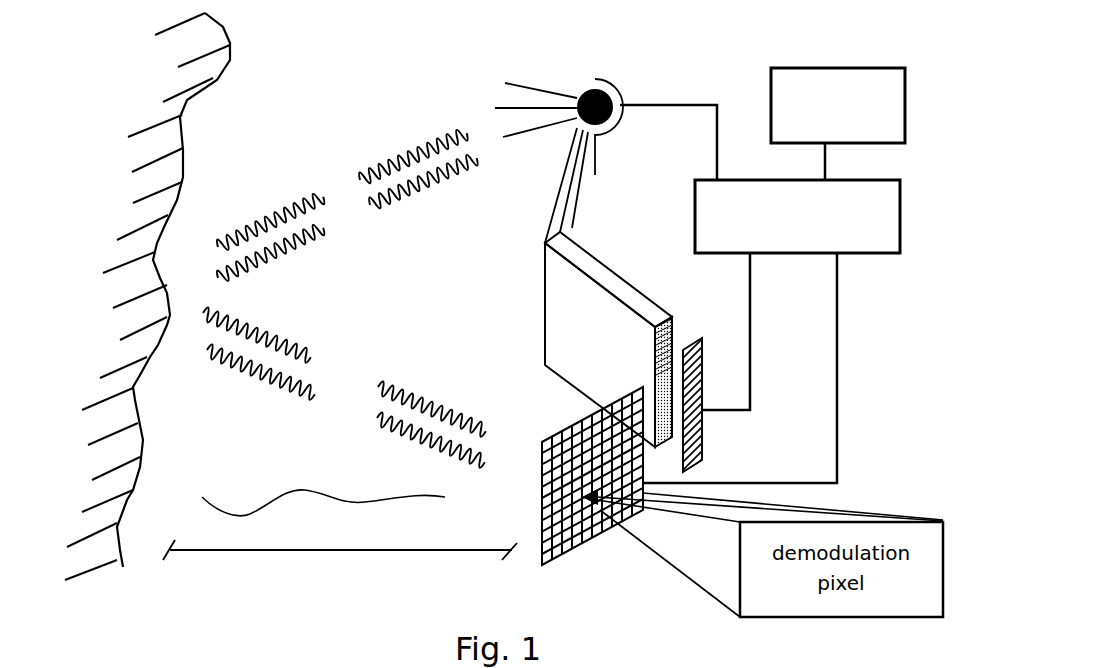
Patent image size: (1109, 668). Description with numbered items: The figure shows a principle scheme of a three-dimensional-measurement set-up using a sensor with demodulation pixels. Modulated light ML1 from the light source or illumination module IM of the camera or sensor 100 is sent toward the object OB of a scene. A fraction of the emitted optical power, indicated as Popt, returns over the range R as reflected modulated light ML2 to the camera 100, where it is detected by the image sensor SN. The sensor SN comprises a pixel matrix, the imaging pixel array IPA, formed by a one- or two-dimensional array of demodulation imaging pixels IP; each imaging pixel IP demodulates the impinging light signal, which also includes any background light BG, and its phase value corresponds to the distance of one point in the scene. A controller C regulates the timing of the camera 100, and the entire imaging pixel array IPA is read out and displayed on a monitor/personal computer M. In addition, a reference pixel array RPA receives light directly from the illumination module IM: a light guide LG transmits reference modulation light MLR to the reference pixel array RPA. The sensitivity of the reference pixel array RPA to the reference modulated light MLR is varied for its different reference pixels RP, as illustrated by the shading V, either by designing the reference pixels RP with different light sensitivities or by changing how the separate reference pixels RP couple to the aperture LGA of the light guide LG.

The object OB is at (185, 160).
The modulated light ML1 is at (420, 138).
The reflected modulated light ML2 is at (438, 397).
The background light BG is at (260, 503).
The optical power Popt is at (452, 482).
The range / distance R is at (340, 563).
The illumination module IM is at (588, 90).
The camera 100 is at (708, 75).
The monitor/personal computer M is at (838, 105).
The controller C is at (797, 216).
The light guide LG is at (560, 194).
The reference modulation light MLR is at (562, 318).
The reference pixel RP is at (702, 362).
The reference pixel array RPA is at (691, 322).
The image sensor SN is at (752, 449).
The aperture of the light guide LGA is at (672, 427).
The shading V is at (673, 372).
The demodulation imaging pixel IP is at (590, 530).
The imaging pixel array IPA is at (543, 598).